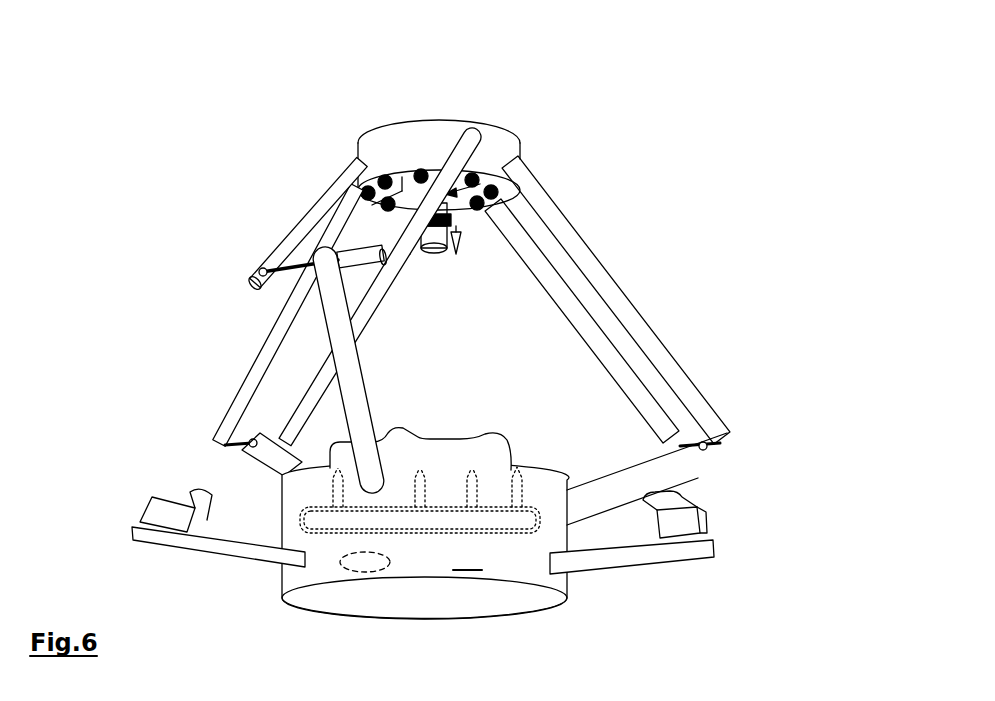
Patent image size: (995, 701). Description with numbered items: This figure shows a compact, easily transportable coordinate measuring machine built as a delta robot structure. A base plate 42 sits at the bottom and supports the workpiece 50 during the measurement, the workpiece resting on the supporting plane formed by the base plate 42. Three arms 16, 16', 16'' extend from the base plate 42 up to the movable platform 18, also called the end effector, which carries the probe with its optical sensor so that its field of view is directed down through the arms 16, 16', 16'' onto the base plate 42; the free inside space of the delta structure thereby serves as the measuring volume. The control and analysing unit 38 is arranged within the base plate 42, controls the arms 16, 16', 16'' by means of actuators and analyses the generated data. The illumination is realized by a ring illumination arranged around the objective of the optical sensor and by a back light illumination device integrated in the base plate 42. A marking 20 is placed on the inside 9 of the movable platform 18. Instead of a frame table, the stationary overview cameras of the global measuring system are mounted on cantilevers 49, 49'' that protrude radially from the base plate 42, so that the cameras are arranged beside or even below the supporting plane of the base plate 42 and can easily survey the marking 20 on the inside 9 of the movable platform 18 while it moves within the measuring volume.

The movable platform 18 is at (380, 148).
The inside of the movable platform 9 is at (383, 185).
The marking 20 is at (360, 224).
The arm 16 is at (627, 303).
The arm 16' is at (310, 287).
The arm 16'' is at (258, 370).
The base plate 42 is at (425, 540).
The control and analysing unit 38 is at (365, 562).
The workpiece 50 is at (475, 445).
The cantilever 49 is at (634, 582).
The cantilever 49'' is at (217, 567).